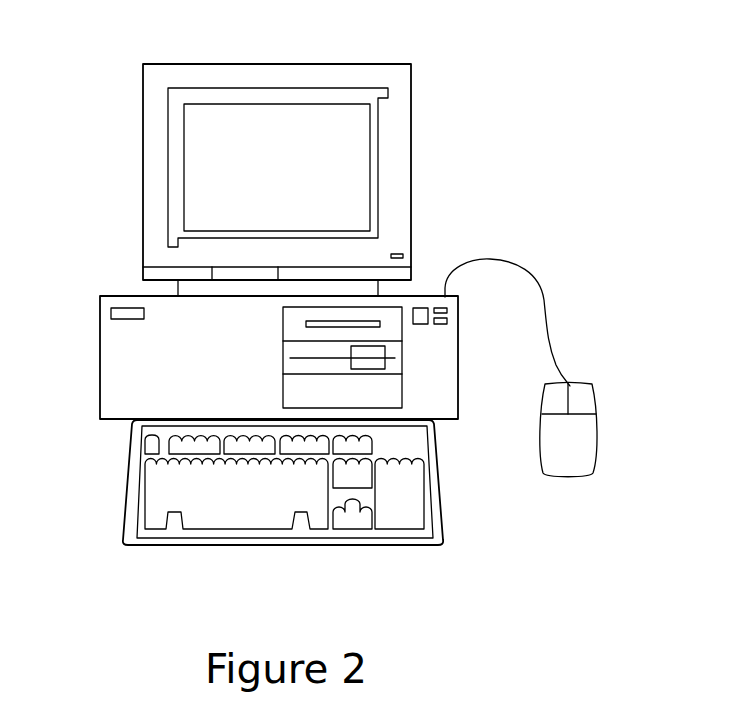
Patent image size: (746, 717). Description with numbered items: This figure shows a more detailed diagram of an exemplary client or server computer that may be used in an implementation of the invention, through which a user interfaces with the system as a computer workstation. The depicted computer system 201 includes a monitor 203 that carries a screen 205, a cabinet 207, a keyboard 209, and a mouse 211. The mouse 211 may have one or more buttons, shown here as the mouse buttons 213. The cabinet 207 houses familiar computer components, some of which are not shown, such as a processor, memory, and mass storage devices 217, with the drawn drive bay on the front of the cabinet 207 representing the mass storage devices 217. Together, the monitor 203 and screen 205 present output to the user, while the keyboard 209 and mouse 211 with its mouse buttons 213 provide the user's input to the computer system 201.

The computer system 201 is at (428, 43).
The monitor 203 is at (412, 145).
The screen 205 is at (201, 158).
The cabinet 207 is at (125, 300).
The keyboard 209 is at (170, 547).
The mouse 211 is at (569, 466).
The mouse buttons 213 is at (563, 402).
The mass storage devices 217 is at (393, 312).